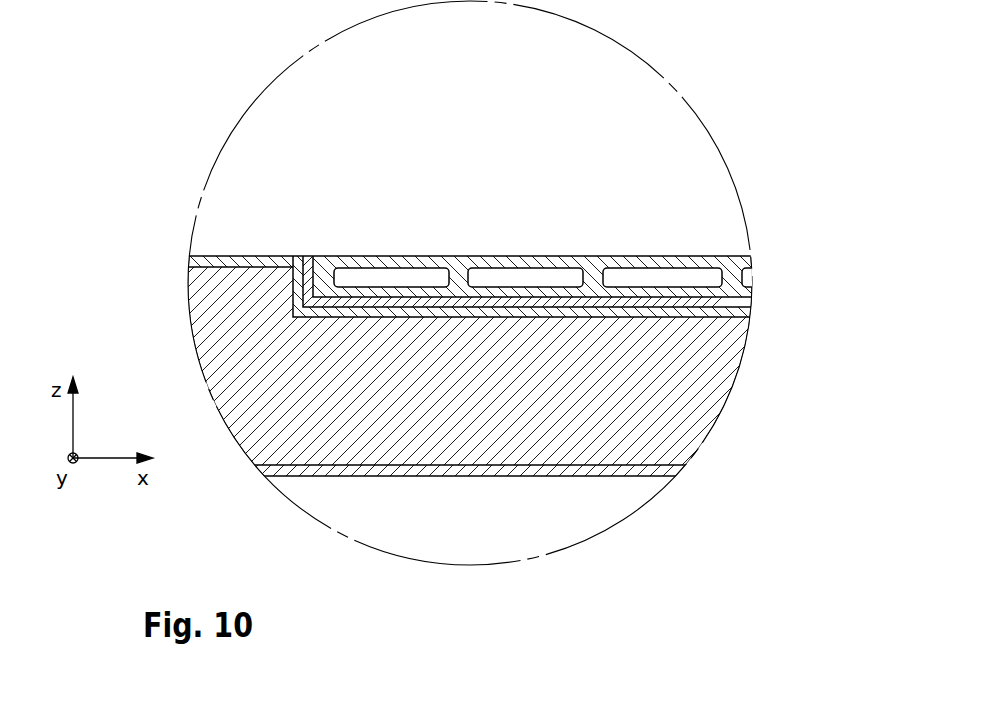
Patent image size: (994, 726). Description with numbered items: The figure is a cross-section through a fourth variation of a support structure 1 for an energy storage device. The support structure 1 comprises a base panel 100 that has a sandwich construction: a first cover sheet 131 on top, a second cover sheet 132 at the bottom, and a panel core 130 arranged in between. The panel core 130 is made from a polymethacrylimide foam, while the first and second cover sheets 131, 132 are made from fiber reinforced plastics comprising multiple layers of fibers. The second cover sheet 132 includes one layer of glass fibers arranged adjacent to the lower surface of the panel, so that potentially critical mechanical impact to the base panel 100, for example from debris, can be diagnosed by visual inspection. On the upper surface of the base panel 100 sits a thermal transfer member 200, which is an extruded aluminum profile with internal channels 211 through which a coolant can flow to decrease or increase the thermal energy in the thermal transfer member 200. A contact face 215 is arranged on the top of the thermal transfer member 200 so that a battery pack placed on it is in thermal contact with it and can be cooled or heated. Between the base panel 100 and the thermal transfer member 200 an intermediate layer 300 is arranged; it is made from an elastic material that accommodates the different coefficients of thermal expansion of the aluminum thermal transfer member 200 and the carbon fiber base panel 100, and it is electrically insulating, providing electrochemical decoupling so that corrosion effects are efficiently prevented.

The support structure 1 is at (402, 283).
The base panel 100 is at (475, 366).
The panel core 130 is at (475, 366).
The first cover sheet 131 is at (235, 261).
The second cover sheet 132 is at (467, 470).
The thermal transfer member 200 is at (557, 167).
The internal channels 211 is at (598, 258).
The contact face 215 is at (554, 218).
The intermediate layer 300 is at (496, 286).